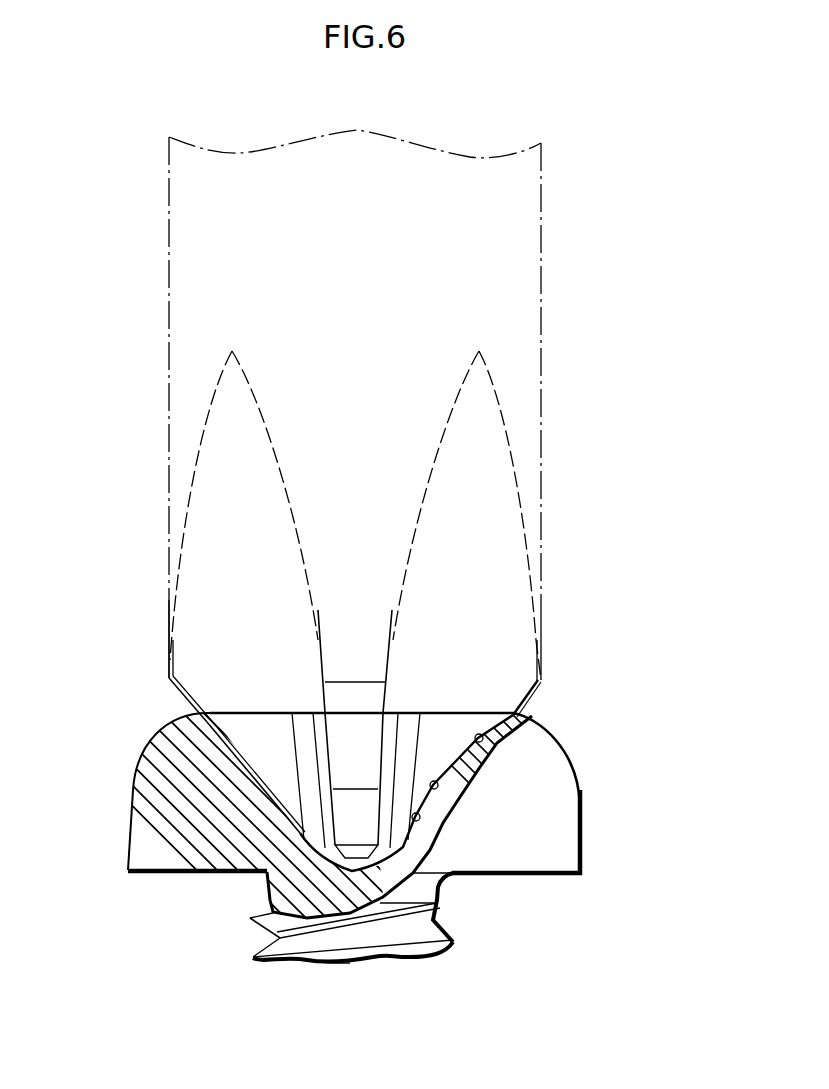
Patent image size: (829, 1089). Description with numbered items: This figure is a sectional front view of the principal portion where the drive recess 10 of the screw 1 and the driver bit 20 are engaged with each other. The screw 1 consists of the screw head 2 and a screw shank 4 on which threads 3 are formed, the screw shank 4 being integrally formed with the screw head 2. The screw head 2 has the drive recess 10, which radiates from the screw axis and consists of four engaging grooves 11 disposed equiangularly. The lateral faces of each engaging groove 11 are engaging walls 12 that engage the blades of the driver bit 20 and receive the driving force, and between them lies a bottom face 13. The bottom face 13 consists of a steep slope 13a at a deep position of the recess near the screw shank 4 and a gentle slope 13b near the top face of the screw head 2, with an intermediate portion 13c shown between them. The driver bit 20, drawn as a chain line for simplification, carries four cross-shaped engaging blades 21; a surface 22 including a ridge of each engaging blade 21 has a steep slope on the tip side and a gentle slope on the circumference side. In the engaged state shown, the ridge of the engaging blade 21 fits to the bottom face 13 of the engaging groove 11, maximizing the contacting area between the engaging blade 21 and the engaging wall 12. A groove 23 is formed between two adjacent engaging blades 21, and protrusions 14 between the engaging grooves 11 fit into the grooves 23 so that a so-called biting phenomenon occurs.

The screw 1 is at (238, 1046).
The screw head 2 is at (545, 860).
The threads 3 is at (460, 943).
The screw shank 4 is at (366, 955).
The drive recess 10 is at (411, 699).
The engaging groove 11 is at (248, 736).
The engaging wall 12 is at (277, 773).
The bottom face 13 is at (690, 696).
The steep slope 13a is at (420, 817).
The gentle slope 13b is at (483, 738).
The fin middle portion 13c is at (438, 785).
The protrusion 14 is at (268, 875).
The driver bit 20 is at (233, 207).
The engaging blade 21 is at (170, 660).
The surface 22 is at (170, 693).
The groove 23 is at (240, 503).